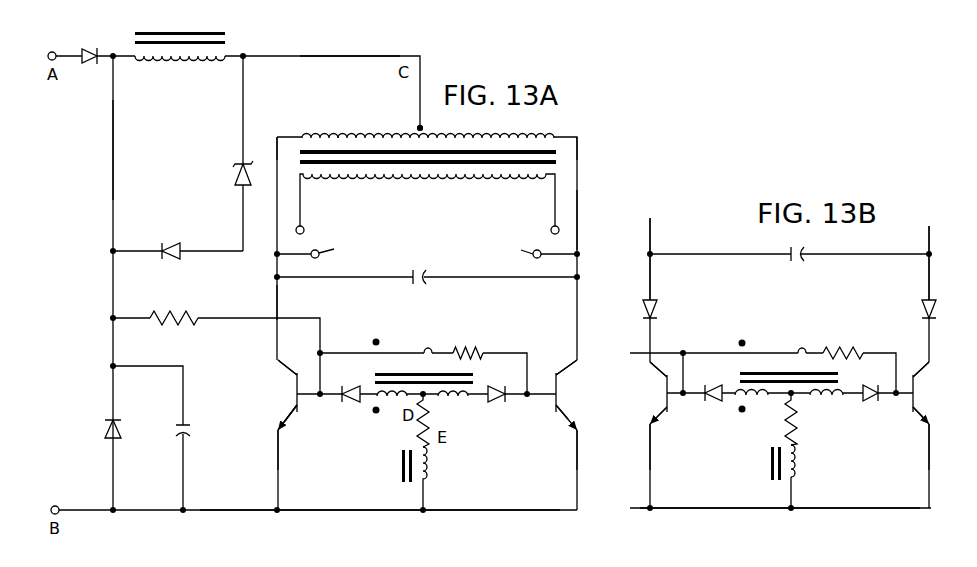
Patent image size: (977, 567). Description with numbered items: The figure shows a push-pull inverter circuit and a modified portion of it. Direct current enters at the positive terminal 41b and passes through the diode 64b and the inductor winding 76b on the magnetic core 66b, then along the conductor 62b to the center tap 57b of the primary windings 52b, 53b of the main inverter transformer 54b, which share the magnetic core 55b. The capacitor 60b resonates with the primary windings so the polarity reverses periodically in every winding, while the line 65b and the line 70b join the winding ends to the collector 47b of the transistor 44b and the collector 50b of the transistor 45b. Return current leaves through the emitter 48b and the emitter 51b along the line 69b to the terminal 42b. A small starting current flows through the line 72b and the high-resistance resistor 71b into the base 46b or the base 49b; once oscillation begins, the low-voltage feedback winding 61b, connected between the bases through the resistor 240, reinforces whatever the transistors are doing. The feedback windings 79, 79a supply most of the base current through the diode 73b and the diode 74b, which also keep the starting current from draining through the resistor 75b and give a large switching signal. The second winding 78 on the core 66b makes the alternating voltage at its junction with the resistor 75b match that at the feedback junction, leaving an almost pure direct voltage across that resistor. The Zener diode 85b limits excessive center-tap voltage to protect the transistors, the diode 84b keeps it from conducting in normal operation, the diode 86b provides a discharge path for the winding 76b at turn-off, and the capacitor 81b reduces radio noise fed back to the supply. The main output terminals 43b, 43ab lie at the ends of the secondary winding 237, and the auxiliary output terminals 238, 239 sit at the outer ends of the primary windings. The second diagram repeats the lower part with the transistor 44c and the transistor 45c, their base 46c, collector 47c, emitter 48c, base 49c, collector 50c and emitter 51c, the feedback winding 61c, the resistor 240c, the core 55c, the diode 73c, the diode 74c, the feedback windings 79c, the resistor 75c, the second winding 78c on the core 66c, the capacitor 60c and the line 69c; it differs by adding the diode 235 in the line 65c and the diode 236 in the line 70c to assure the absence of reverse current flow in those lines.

In FIG. 13A, the positive terminal 41b is at (53, 52).
In FIG. 13A, the diode 64b is at (91, 50).
In FIG. 13A, the magnetic core 66b is at (135, 32).
In FIG. 13A, the inductor winding 76b is at (145, 61).
In FIG. 13A, the conductor 62b is at (368, 55).
In FIG. 13A, the line 72b is at (113, 144).
In FIG. 13A, the primary winding 52b is at (325, 132).
In FIG. 13A, the center tap 57b is at (418, 128).
In FIG. 13A, the primary winding 53b is at (440, 133).
In FIG. 13A, the main inverter transformer 54b is at (582, 127).
In FIG. 13A, the magnetic core 55b is at (558, 161).
In FIG. 13A, the Zener diode 85b is at (235, 176).
In FIG. 13A, the diode 84b is at (181, 243).
In FIG. 13A, the secondary winding 237 is at (450, 181).
In FIG. 13A, the main output terminal 43b is at (305, 230).
In FIG. 13A, the main output terminal 43ab is at (550, 230).
In FIG. 13A, the line 70b is at (577, 220).
In FIG. 13A, the auxiliary output terminal 238 is at (334, 249).
In FIG. 13A, the auxiliary output terminal 239 is at (521, 250).
In FIG. 13A, the capacitor 60b is at (412, 272).
In FIG. 13A, the line 65b is at (276, 297).
In FIG. 13A, the resistor 71b is at (168, 308).
In FIG. 13A, the collector 47b is at (290, 366).
In FIG. 13A, the low-voltage feedback winding 61b is at (403, 363).
In FIG. 13A, the resistor 240 is at (458, 350).
In FIG. 13A, the collector 50b is at (560, 376).
In FIG. 13A, the transistor 44b is at (288, 392).
In FIG. 13A, the diode 73b is at (360, 403).
In FIG. 13A, the diode 74b is at (500, 386).
In FIG. 13A, the transistor 45b is at (566, 393).
In FIG. 13A, the base 46b is at (297, 410).
In FIG. 13A, the emitter 48b is at (280, 440).
In FIG. 13A, the feedback winding 79 is at (397, 411).
In FIG. 13A, the resistor 75b is at (429, 419).
In FIG. 13A, the feedback winding 79a is at (470, 400).
In FIG. 13A, the base 49b is at (565, 426).
In FIG. 13A, the emitter 51b is at (577, 440).
In FIG. 13A, the diode 86b is at (105, 432).
In FIG. 13A, the capacitor 81b is at (190, 425).
In FIG. 13A, the terminal 42b is at (57, 505).
In FIG. 13A, the line 69b is at (243, 508).
In FIG. 13A, the second winding 78 is at (430, 468).
In FIG. 13B, the line 65c is at (648, 278).
In FIG. 13B, the capacitor 60c is at (773, 265).
In FIG. 13B, the line 70c is at (898, 263).
In FIG. 13B, the diode 235 is at (660, 304).
In FIG. 13B, the diode 236 is at (896, 300).
In FIG. 13B, the low-voltage feedback winding 61c is at (800, 343).
In FIG. 13B, the resistor 240c is at (853, 328).
In FIG. 13B, the collector 50c is at (920, 377).
In FIG. 13B, the transistor 45c is at (910, 365).
In FIG. 13B, the collector 47c is at (658, 377).
In FIG. 13B, the magnetic core 55c is at (742, 373).
In FIG. 13B, the diode 74c is at (861, 382).
In FIG. 13B, the transistor 44c is at (660, 398).
In FIG. 13B, the diode 73c is at (722, 402).
In FIG. 13B, the feedback winding 79c is at (767, 396).
In FIG. 13B, the resistor 75c is at (813, 419).
In FIG. 13B, the base 46c is at (667, 410).
In FIG. 13B, the emitter 48c is at (652, 440).
In FIG. 13B, the base 49c is at (913, 409).
In FIG. 13B, the emitter 51c is at (929, 426).
In FIG. 13B, the second winding 78c is at (797, 460).
In FIG. 13B, the magnetic core 66c is at (771, 482).
In FIG. 13B, the line 69c is at (648, 507).